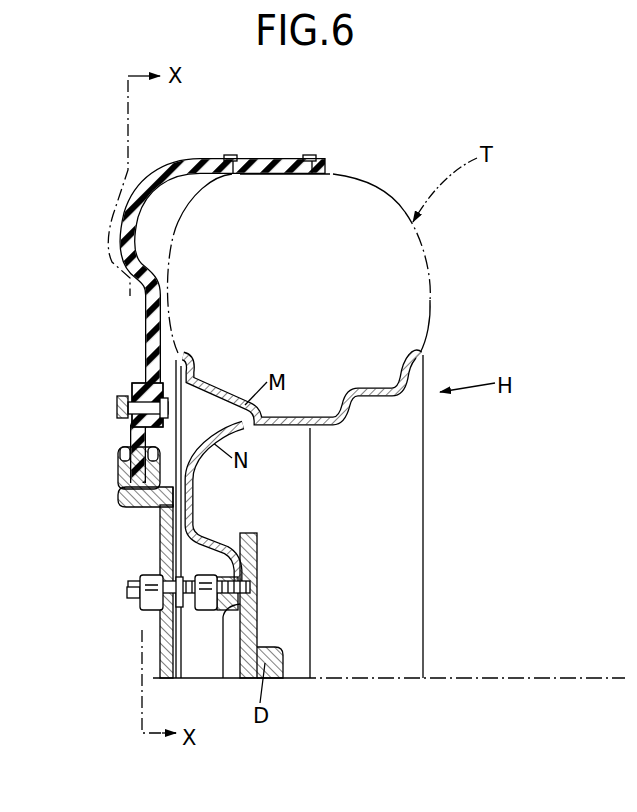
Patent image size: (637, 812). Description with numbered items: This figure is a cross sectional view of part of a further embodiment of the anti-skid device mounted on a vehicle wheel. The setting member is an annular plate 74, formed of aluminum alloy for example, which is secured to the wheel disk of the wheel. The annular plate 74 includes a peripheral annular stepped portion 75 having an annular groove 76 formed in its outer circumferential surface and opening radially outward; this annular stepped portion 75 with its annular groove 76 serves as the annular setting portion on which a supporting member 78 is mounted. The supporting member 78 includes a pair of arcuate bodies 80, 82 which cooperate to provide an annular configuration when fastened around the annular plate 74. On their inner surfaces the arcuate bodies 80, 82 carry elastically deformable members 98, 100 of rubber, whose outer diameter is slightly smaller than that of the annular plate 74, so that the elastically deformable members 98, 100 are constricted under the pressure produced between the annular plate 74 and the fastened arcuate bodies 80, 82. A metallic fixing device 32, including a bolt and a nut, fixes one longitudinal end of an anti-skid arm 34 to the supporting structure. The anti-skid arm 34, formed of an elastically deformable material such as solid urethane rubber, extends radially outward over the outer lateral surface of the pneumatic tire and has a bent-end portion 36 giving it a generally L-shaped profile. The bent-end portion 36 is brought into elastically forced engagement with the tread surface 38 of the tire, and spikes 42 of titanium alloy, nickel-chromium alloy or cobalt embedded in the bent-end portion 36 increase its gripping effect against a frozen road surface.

The fixing device 32 is at (135, 405).
The anti-skid arm 34 is at (132, 312).
The bent-end portion 36 is at (245, 166).
The tread surface 38 is at (344, 170).
The spike 42 is at (306, 163).
The annular plate 74 is at (165, 530).
The peripheral annular stepped portion 75 is at (115, 473).
The annular groove 76 is at (127, 449).
The supporting member 78 is at (125, 428).
The arcuate body 80 is at (193, 468).
The arcuate body 82 is at (213, 553).
The elastically deformable member 98 is at (120, 487).
The elastically deformable member 100 is at (106, 525).